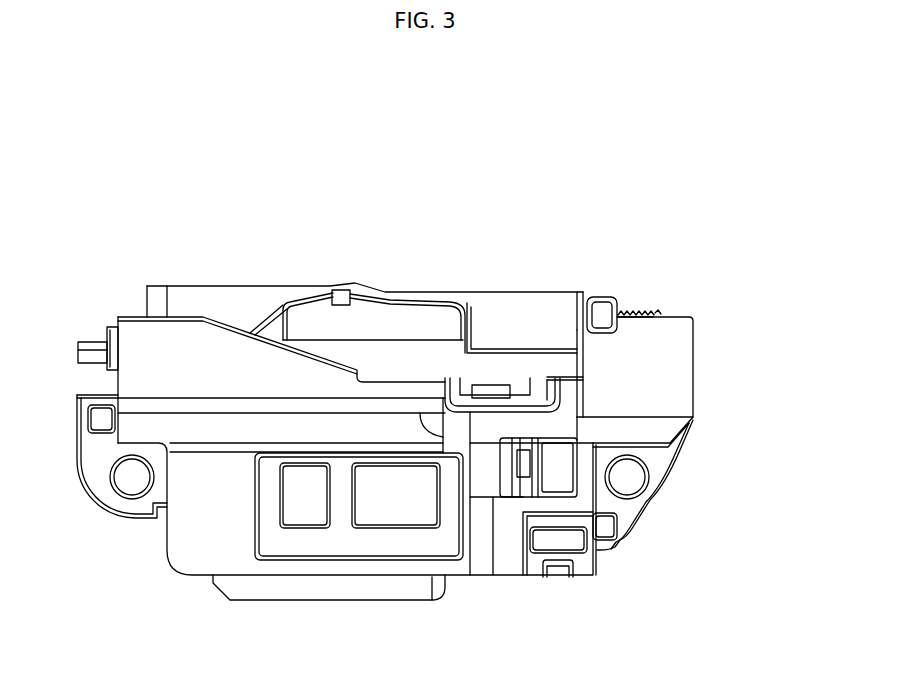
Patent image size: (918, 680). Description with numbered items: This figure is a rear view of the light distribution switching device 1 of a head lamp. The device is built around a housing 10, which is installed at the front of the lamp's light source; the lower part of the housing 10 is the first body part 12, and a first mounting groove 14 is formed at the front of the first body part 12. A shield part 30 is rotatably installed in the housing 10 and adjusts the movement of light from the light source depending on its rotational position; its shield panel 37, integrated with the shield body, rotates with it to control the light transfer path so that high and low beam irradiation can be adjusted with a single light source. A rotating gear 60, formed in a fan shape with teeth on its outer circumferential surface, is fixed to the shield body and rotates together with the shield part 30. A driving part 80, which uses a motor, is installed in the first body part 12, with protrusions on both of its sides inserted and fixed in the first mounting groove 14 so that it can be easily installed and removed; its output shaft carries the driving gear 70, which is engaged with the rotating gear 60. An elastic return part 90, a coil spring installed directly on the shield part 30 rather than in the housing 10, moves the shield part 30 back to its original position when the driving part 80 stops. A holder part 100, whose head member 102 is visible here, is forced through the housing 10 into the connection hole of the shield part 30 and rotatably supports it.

The light distribution switching device 1 is at (593, 200).
The housing 10 is at (810, 600).
The first body part 12 is at (583, 580).
The first mounting groove 14 is at (703, 381).
The shield part 30 is at (446, 280).
The shield panel 37 is at (518, 303).
The rotating gear 60 is at (500, 470).
The driving gear 70 is at (516, 500).
The driving part 80 is at (324, 588).
The elastic return part 90 is at (640, 312).
The holder part 100 is at (80, 303).
The head member 102 is at (112, 325).